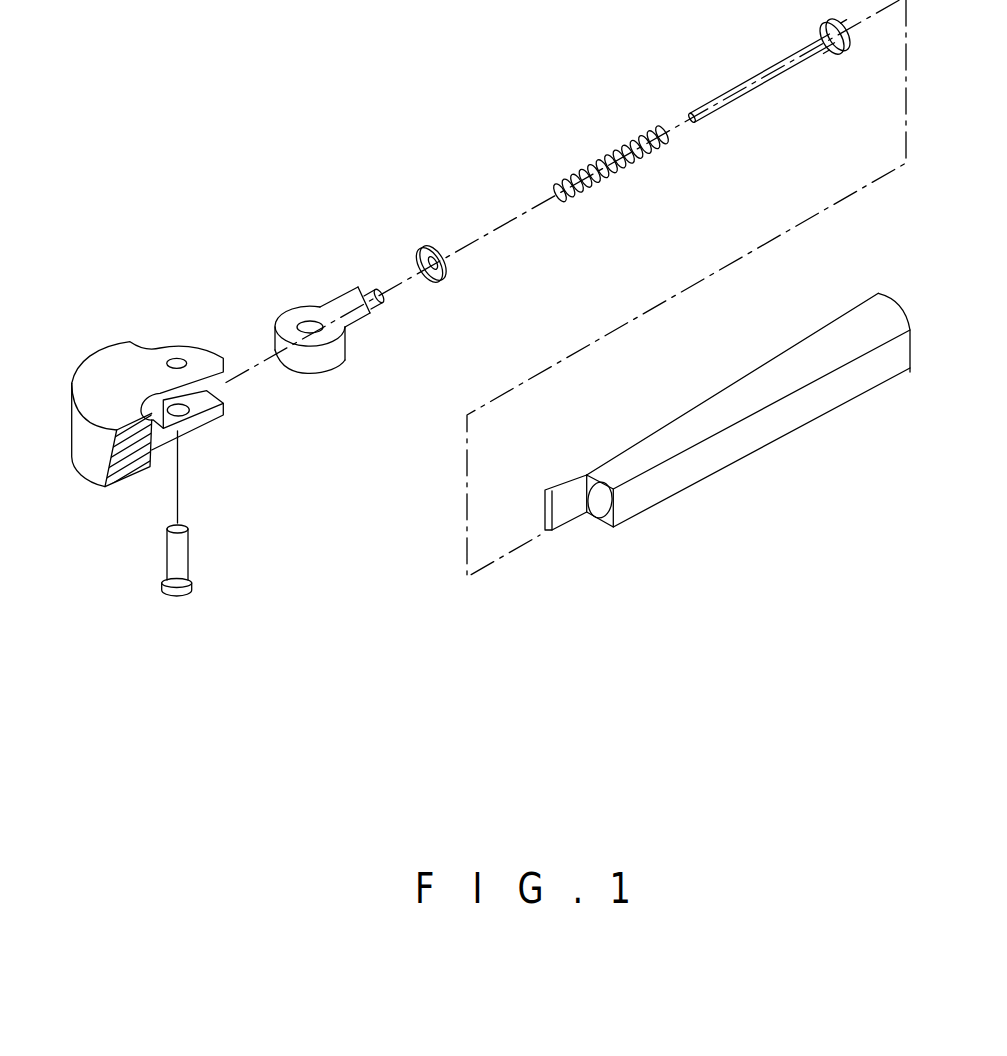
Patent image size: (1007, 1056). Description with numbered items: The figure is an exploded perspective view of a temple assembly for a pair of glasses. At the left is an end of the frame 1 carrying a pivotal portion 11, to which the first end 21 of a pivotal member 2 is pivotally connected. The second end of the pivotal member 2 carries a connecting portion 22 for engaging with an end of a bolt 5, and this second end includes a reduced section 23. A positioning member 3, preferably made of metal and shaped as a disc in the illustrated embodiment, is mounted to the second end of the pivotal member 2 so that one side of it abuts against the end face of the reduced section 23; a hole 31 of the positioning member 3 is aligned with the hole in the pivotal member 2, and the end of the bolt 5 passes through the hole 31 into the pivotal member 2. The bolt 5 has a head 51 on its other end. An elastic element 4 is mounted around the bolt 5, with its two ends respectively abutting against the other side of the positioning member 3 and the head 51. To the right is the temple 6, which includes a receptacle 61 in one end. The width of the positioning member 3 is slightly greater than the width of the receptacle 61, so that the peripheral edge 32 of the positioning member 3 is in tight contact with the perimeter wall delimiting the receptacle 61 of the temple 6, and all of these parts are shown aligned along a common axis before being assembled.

The frame 1 is at (95, 457).
The pivotal portion 11 is at (175, 357).
The pivotal member 2 is at (324, 321).
The first end 21 is at (308, 327).
The connecting portion 22 is at (348, 275).
The reduced section 23 is at (375, 305).
The positioning member 3 is at (462, 278).
The hole 31 is at (427, 253).
The peripheral edge 32 is at (451, 263).
The elastic element 4 is at (600, 186).
The bolt 5 is at (787, 98).
The head 51 is at (844, 54).
The temple 6 is at (725, 470).
The receptacle 61 is at (600, 500).